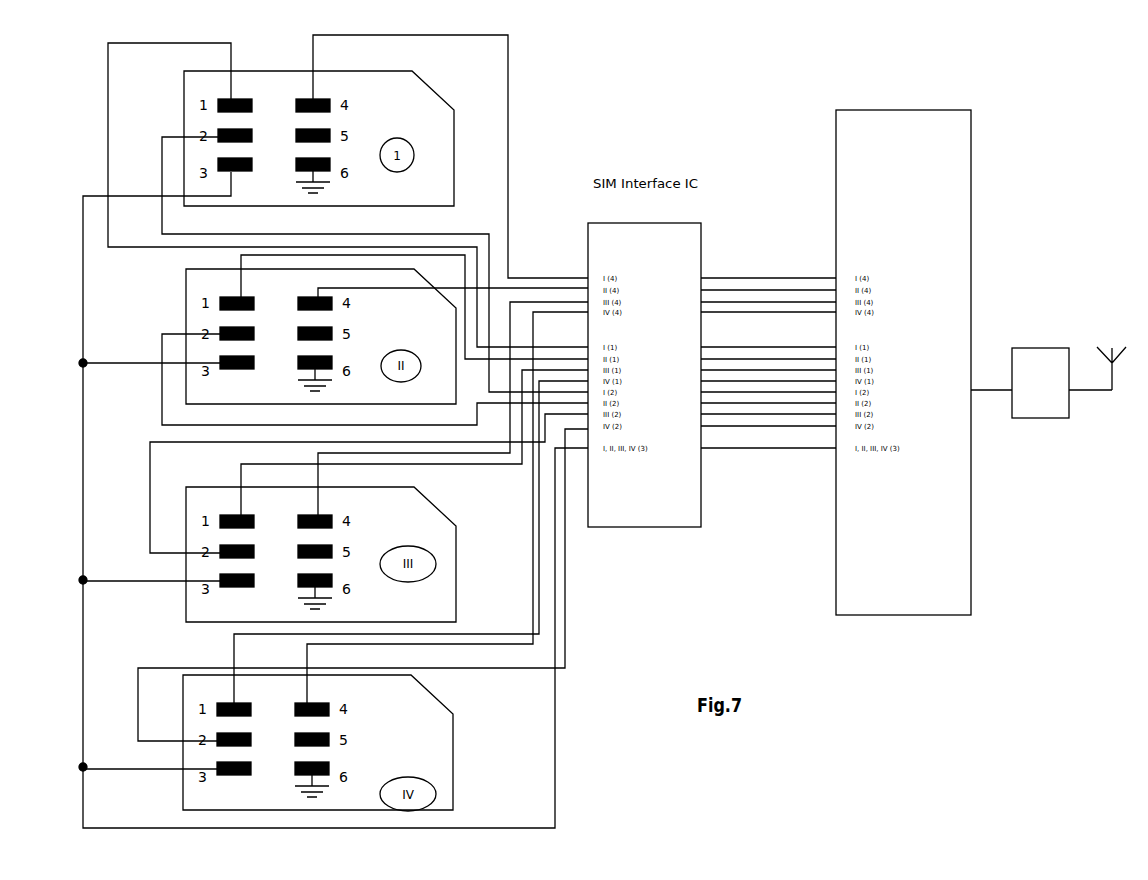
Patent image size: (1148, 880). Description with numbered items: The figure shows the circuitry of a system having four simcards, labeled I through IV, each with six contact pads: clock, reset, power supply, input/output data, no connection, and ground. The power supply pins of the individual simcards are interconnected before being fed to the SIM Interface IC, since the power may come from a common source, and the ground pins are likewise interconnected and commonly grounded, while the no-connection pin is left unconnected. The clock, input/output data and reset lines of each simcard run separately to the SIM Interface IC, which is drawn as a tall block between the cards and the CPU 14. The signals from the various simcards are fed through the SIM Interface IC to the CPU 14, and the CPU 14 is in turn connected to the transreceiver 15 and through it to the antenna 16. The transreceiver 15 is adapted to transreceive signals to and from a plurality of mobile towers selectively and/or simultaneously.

The CPU 14 is at (903, 337).
The transreceiver 15 is at (1040, 383).
The antenna 16 is at (1111, 343).